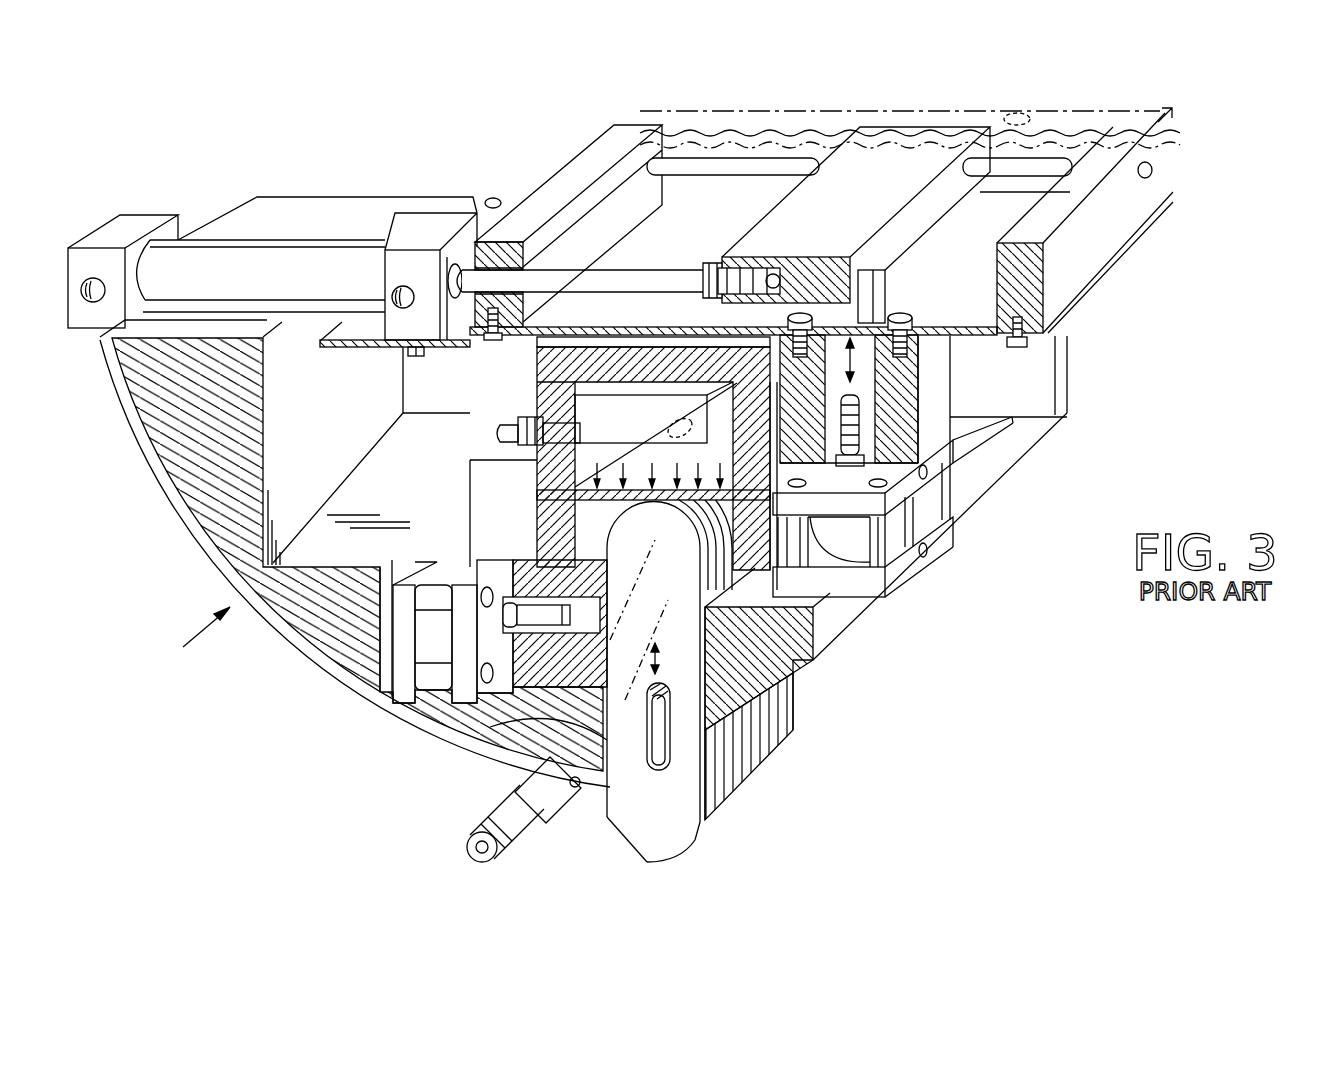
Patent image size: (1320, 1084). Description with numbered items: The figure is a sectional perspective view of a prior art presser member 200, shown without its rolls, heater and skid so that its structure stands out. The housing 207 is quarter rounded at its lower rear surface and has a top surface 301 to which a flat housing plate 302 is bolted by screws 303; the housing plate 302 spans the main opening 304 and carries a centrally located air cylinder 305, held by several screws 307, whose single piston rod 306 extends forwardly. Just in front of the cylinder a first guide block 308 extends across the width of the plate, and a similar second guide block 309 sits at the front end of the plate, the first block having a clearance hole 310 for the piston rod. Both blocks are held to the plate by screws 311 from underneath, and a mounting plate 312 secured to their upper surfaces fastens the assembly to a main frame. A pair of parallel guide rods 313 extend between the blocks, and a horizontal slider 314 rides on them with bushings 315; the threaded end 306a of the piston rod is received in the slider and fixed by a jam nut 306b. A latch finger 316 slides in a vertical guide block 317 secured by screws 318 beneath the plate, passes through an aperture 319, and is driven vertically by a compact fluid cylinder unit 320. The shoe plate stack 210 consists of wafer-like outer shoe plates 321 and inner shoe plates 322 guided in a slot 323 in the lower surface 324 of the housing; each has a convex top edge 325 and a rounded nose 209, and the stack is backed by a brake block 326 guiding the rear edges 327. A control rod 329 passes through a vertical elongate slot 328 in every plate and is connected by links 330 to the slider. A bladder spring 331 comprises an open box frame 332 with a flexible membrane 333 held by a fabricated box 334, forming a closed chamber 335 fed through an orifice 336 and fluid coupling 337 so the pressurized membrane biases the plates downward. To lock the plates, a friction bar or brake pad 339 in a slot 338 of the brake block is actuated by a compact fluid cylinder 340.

The presser member 200 is at (175, 638).
The housing 207 is at (197, 513).
The rounded bottom work piece presser edge or nose 209 is at (663, 860).
The shoe plate stack 210 is at (647, 847).
The top surface 301 is at (315, 223).
The housing plate 302 is at (368, 350).
The screws 303 is at (493, 197).
The main opening 304 is at (419, 212).
The air cylinder 305 is at (247, 297).
The piston rod 306 is at (600, 268).
The threaded end 306a is at (765, 260).
The jam nut 306b is at (713, 257).
The screws 307 is at (427, 357).
The first guide block 308 is at (632, 211).
The second guide block 309 is at (1050, 269).
The clearance hole 310 is at (537, 267).
The screws 311 is at (497, 343).
The mounting plate 312 is at (598, 112).
The guide rods 313 is at (697, 178).
The slider 314 is at (816, 197).
The bushings 315 is at (965, 172).
The latch finger 316 is at (917, 388).
The vertical guide block 317 is at (947, 432).
The screws 318 is at (913, 312).
The aperture 319 is at (880, 267).
The compact fluid cylinder unit 320 is at (850, 545).
The outer shoe plates 321 is at (797, 697).
The inner shoe plates 322 is at (777, 732).
The slot 323 is at (527, 733).
The lower surface 324 is at (743, 780).
The convex top edge 325 is at (660, 507).
The brake block 326 is at (490, 718).
The rear edges 327 is at (603, 817).
The vertical elongate slot 328 is at (670, 770).
The control rod 329 is at (795, 661).
The link 330 is at (512, 797).
The bladder spring 331 is at (590, 345).
The open box frame 332 is at (470, 495).
The flexible membrane 333 is at (745, 480).
The fabricated box 334 is at (537, 388).
The closed chamber 335 is at (537, 493).
The orifice 336 is at (668, 425).
The fluid coupling 337 is at (497, 432).
The slot 338 is at (608, 635).
The friction bar or brake pad 339 is at (607, 637).
The compact fluid cylinder 340 is at (433, 647).